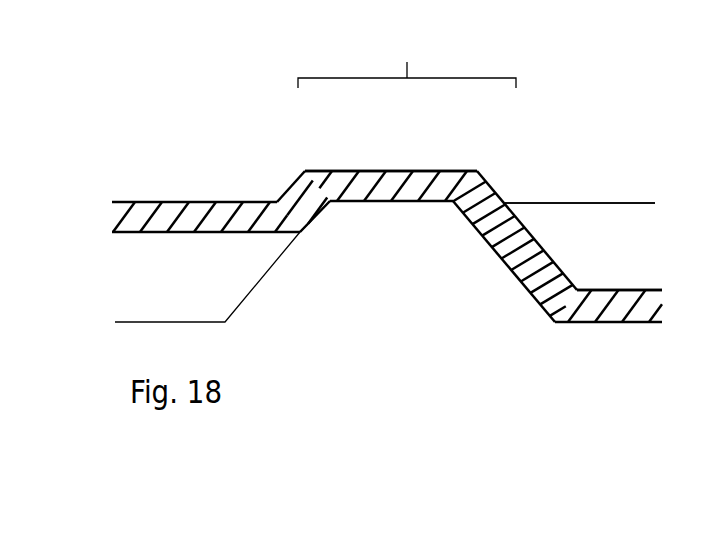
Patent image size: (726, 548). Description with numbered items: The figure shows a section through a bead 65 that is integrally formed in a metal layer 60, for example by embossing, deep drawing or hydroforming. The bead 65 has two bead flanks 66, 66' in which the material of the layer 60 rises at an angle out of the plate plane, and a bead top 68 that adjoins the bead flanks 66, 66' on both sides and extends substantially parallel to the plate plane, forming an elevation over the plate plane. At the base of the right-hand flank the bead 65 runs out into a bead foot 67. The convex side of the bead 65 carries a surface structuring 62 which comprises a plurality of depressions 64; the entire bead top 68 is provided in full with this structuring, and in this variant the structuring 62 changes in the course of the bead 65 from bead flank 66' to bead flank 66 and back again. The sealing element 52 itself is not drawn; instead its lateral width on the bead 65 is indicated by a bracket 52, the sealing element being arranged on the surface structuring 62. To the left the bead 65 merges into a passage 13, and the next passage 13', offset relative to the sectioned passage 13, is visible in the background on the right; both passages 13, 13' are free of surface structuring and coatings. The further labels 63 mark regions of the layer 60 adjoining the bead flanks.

The passage 13 is at (222, 261).
The passage 13' is at (586, 195).
The sealing element 52 is at (407, 62).
The metal layer 60 is at (582, 303).
The surface structuring 62 is at (412, 170).
The first layer 63 is at (283, 197).
The depression 64 is at (457, 170).
The bead 65 is at (536, 129).
The bead flank 66 is at (526, 246).
The bead flank 66' is at (298, 176).
The bead foot 67 is at (638, 289).
The bead top 68 is at (357, 170).